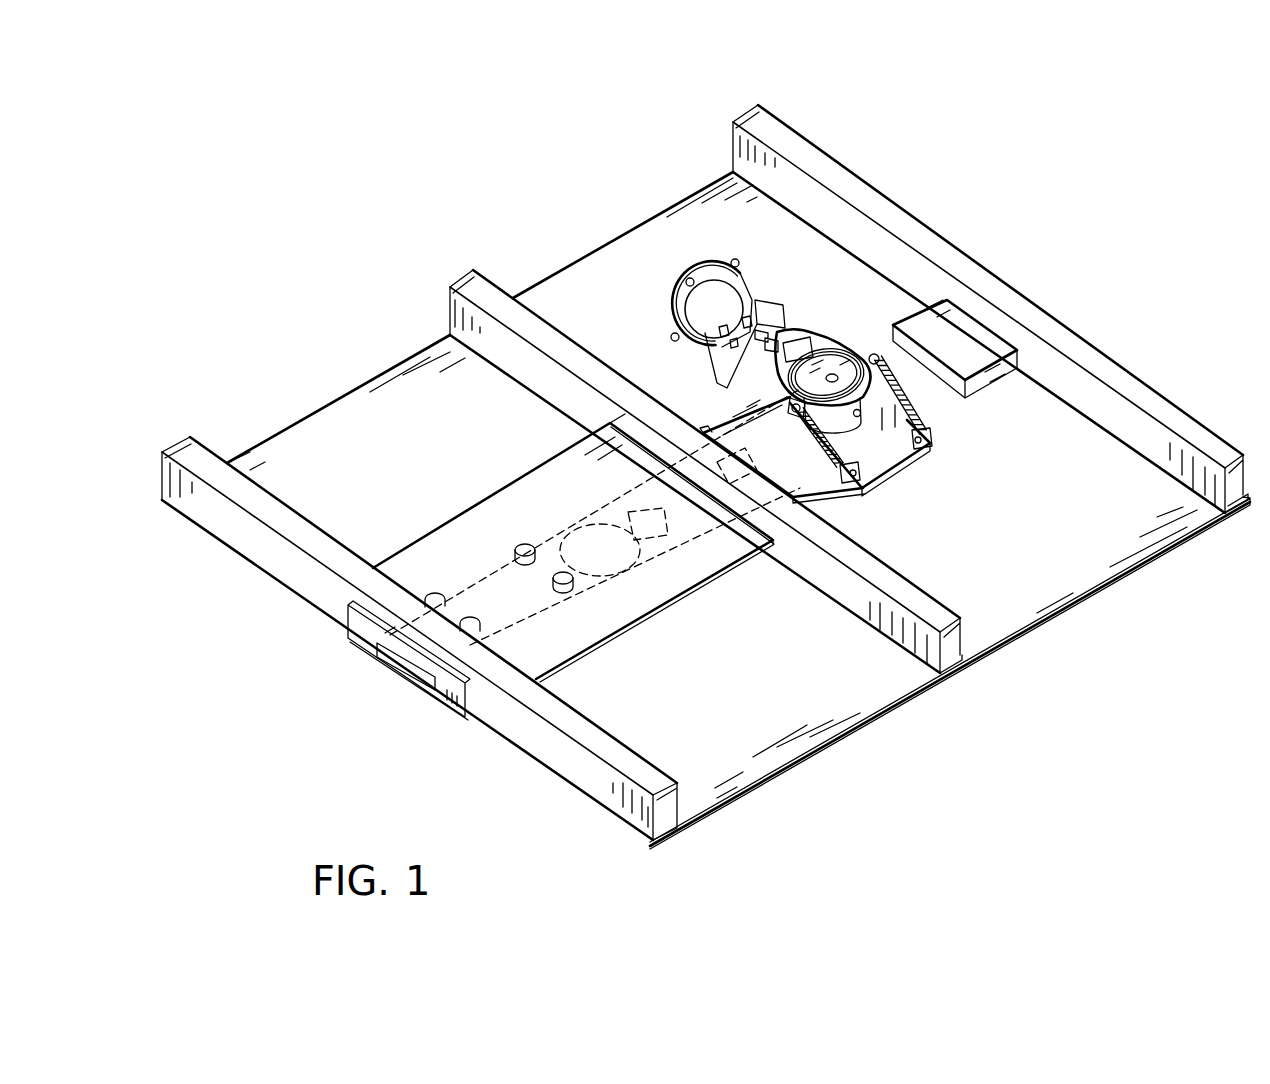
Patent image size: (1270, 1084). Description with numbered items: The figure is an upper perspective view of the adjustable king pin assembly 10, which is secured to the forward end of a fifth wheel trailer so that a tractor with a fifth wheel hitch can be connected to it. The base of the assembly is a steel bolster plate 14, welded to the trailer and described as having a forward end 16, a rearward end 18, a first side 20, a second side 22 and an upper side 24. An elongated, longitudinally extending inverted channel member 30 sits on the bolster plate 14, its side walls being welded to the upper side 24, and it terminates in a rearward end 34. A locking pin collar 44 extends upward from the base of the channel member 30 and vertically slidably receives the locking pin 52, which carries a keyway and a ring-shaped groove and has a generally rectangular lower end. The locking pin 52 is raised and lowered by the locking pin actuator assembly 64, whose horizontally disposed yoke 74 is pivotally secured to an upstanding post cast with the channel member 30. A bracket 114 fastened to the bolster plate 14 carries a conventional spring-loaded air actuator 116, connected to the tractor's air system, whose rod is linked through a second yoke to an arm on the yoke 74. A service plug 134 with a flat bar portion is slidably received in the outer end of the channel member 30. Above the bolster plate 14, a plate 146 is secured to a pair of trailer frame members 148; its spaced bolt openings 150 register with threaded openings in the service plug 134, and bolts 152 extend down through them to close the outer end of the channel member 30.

The adjustable king pin assembly 10 is at (706, 503).
The bolster plate 14 is at (706, 503).
The forward end 16 is at (567, 802).
The rearward end 18 is at (1128, 350).
The first side 20 is at (880, 733).
The second side 22 is at (375, 378).
The upper side 24 is at (585, 494).
The channel member 30 is at (957, 350).
The rearward end 34 is at (988, 330).
The locking pin collar 44 is at (838, 422).
The locking pin 52 is at (838, 378).
The locking pin actuator assembly 64 is at (695, 250).
The yoke 74 is at (891, 320).
The bracket 114 is at (694, 368).
The air actuator 116 is at (673, 303).
The service plug 134 is at (368, 657).
The plate 146 is at (537, 490).
The frame members 148 is at (1158, 470).
The bolt openings 150 is at (379, 663).
The bolts 152 is at (513, 550).